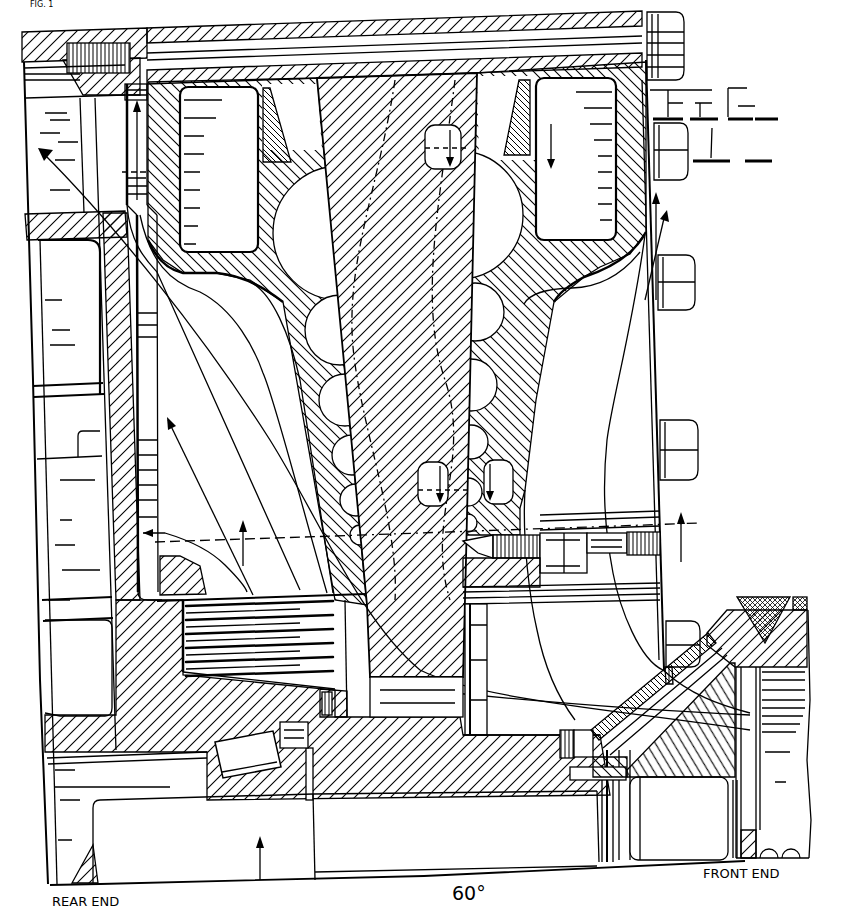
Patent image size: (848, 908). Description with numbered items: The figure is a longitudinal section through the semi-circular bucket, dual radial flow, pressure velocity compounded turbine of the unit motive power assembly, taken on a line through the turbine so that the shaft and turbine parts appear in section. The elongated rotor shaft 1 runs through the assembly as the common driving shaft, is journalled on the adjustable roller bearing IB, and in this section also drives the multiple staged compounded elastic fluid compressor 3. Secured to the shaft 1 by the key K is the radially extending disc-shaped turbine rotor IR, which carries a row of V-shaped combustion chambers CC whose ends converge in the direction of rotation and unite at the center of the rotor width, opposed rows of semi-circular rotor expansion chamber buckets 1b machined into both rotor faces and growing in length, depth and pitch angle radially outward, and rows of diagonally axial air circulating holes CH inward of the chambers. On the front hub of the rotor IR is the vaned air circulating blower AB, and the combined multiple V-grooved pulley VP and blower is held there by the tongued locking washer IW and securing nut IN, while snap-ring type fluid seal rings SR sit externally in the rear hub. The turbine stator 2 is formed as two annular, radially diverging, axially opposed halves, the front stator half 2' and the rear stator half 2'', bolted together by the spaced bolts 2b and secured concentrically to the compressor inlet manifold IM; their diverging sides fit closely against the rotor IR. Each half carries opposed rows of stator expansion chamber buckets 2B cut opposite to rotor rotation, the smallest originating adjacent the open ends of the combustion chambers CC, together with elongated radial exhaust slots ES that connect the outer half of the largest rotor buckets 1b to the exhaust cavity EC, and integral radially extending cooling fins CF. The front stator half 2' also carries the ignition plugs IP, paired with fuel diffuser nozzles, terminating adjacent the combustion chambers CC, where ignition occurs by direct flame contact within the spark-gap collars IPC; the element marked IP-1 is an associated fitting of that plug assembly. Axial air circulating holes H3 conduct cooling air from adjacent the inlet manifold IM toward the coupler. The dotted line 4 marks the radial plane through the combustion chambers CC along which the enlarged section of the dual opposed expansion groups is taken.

The rotor shaft 1 is at (233, 873).
The rotor expansion chamber buckets 1b is at (340, 259).
The turbine stator 2 is at (332, 165).
The bolts 2b is at (660, 44).
The front stator half 2' is at (662, 241).
The rear stator half 2'' is at (124, 150).
The stator expansion chamber buckets 2B is at (284, 227).
The elastic fluid compressor 3 is at (491, 315).
The section line 4— 4 is at (427, 539).
The air circulating blower AB is at (510, 728).
The V-shaped combustion chambers CC is at (514, 502).
The cooling fins CF is at (647, 399).
The air circulating holes CH is at (392, 651).
The exhaust cavity EC is at (208, 248).
The exhaust slots ES is at (291, 146).
The axial air circulating holes H3 is at (76, 463).
The adjustable roller bearing IB is at (214, 784).
The compressor inlet manifold IM is at (100, 404).
The securing nut IN is at (637, 840).
The ignition plug IP is at (566, 573).
The inlet pipe fitting IP-1 is at (616, 556).
The spark-gap collars IPC is at (483, 612).
The turbine rotor IR is at (470, 673).
The tongued locking washer IW is at (641, 818).
The key K is at (497, 836).
The fluid seal rings SR is at (330, 775).
The V-grooved pulley VP is at (790, 597).